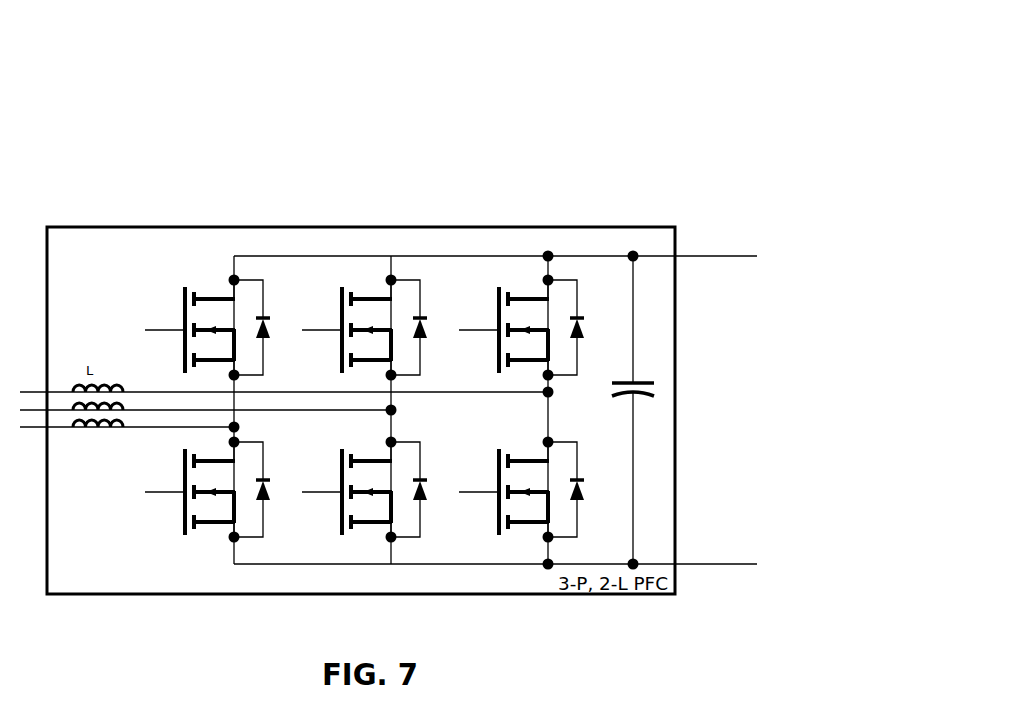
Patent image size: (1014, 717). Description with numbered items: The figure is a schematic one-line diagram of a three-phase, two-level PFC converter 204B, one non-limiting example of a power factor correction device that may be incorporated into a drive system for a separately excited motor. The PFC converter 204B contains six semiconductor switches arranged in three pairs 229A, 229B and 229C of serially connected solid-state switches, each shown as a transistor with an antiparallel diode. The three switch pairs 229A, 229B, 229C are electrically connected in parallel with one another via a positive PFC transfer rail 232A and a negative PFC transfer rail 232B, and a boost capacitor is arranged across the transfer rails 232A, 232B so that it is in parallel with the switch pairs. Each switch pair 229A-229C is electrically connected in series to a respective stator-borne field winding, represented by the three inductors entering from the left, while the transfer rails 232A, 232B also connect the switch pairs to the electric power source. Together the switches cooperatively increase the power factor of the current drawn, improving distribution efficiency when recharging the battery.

The 3-phase, 2-level PFC converter 204B is at (685, 87).
The first switch pair 229A is at (211, 264).
The second switch pair 229B is at (368, 264).
The third switch pair 229C is at (525, 264).
The positive PFC transfer rail 232A is at (720, 257).
The negative PFC transfer rail 232B is at (722, 565).